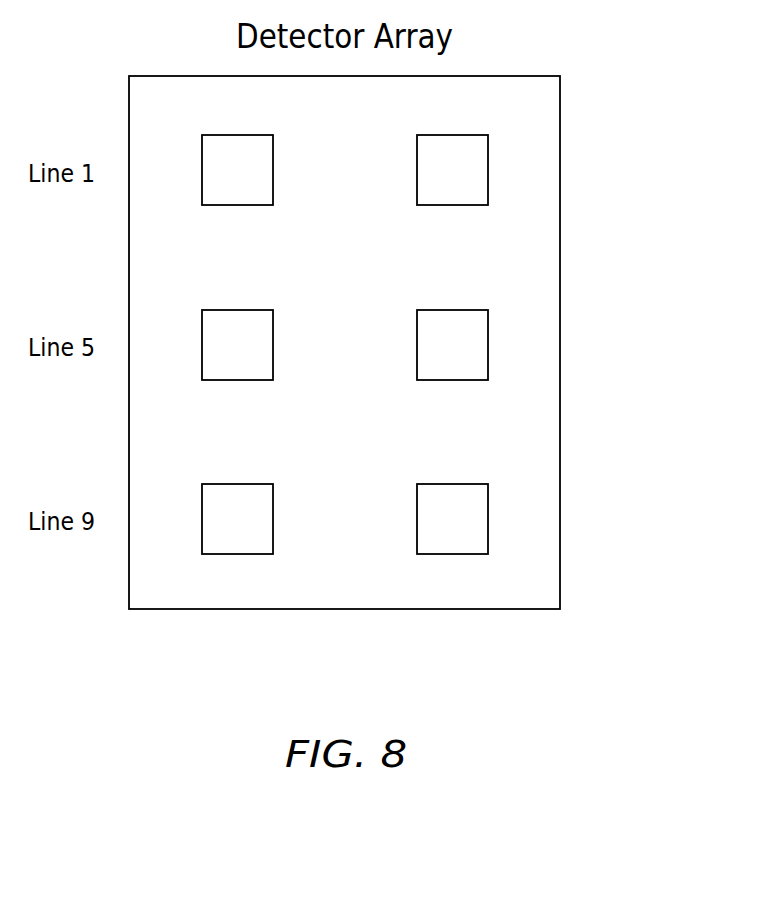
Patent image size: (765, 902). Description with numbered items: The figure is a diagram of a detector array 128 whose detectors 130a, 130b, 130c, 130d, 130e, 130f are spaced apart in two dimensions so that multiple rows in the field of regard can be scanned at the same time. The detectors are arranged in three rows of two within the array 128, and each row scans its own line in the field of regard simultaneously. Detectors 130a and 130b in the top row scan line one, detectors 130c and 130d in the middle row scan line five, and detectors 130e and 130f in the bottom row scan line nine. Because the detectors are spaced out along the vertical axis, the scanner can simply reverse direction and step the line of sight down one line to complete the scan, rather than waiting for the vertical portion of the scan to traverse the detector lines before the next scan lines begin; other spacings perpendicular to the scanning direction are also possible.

The detector array 128 is at (560, 113).
The detector 130a is at (237, 205).
The detector 130b is at (452, 205).
The detector 130c is at (237, 380).
The detector 130d is at (452, 380).
The detector 130e is at (237, 554).
The detector 130f is at (452, 554).